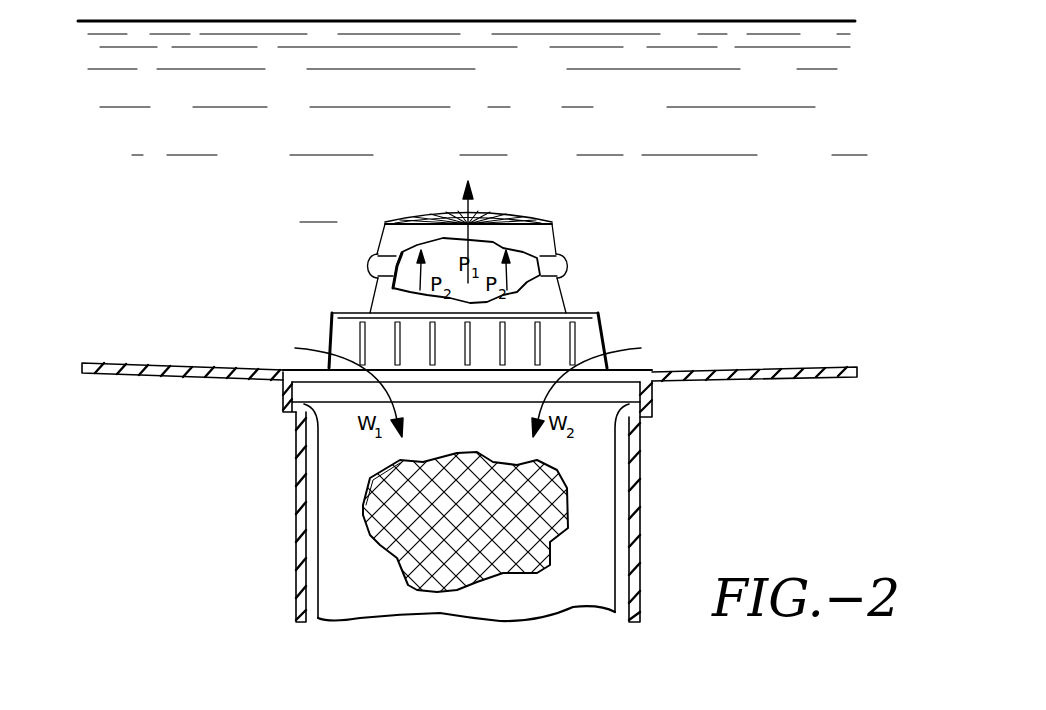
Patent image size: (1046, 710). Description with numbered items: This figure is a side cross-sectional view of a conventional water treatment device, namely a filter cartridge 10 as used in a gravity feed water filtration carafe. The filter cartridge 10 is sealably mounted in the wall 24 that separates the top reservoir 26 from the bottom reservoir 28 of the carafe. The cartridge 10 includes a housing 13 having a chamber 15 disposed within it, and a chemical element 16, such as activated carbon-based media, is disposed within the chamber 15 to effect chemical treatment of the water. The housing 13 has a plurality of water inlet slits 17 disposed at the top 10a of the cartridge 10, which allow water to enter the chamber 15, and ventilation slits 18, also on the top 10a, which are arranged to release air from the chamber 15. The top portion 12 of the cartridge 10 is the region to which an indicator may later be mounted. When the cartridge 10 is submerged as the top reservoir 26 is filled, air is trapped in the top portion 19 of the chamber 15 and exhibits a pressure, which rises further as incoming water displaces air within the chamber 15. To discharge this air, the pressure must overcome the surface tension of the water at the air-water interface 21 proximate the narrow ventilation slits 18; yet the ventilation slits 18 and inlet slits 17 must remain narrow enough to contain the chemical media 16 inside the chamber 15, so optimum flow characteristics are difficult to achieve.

The filter cartridge 10 is at (615, 543).
The top of the cartridge 10a is at (387, 220).
The top portion of the filter cartridge 12 is at (564, 287).
The housing 13 is at (342, 565).
The chamber 15 is at (560, 490).
The chemical element 16 is at (383, 510).
The water inlet slits 17 is at (577, 337).
The ventilation slits 18 is at (500, 216).
The top portion of the chamber 19 is at (530, 258).
The air-water interface 21 is at (428, 215).
The wall 24 is at (787, 381).
The top reservoir 26 is at (667, 188).
The bottom reservoir 28 is at (735, 445).